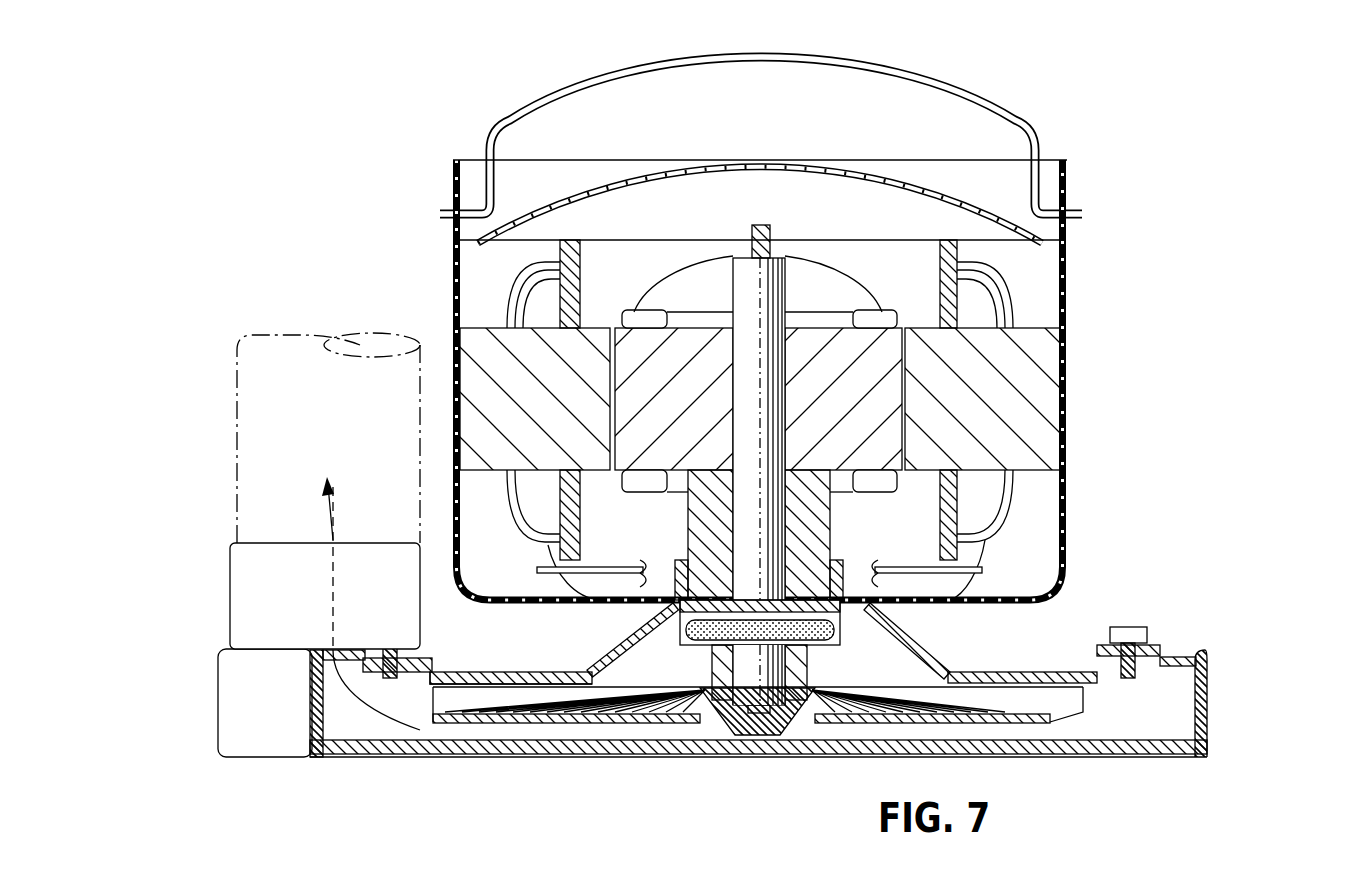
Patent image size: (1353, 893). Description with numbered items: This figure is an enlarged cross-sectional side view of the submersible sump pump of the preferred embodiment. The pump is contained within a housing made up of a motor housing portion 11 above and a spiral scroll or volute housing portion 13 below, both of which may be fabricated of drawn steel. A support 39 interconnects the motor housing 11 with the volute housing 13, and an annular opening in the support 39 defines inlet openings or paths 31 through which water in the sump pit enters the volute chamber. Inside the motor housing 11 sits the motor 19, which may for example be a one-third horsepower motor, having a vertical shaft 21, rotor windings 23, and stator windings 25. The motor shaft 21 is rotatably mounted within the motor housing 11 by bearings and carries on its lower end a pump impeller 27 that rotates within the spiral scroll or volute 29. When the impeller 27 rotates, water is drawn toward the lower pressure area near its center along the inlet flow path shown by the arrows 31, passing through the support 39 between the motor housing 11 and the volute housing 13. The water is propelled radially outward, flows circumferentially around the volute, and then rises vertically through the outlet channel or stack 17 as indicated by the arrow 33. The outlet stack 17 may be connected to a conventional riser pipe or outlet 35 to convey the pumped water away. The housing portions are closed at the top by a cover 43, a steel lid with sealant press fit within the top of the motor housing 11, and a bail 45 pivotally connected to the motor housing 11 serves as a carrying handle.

The motor housing portion 11 is at (1077, 308).
The volute housing portion 13 is at (771, 665).
The outlet stack 17 is at (228, 576).
The motor 19 is at (1025, 282).
The vertical shaft 21 is at (760, 307).
The rotor windings 23 is at (845, 398).
The stator windings 25 is at (987, 403).
The pump impeller 27 is at (1068, 706).
The spiral scroll or volute 29 is at (1173, 665).
The inlet openings or paths 31 is at (642, 647).
The outlet flow arrow 33 is at (335, 525).
The riser pipe or outlet 35 is at (255, 398).
The support 39 is at (1043, 675).
The cover 43 is at (627, 178).
The bail 45 is at (522, 112).